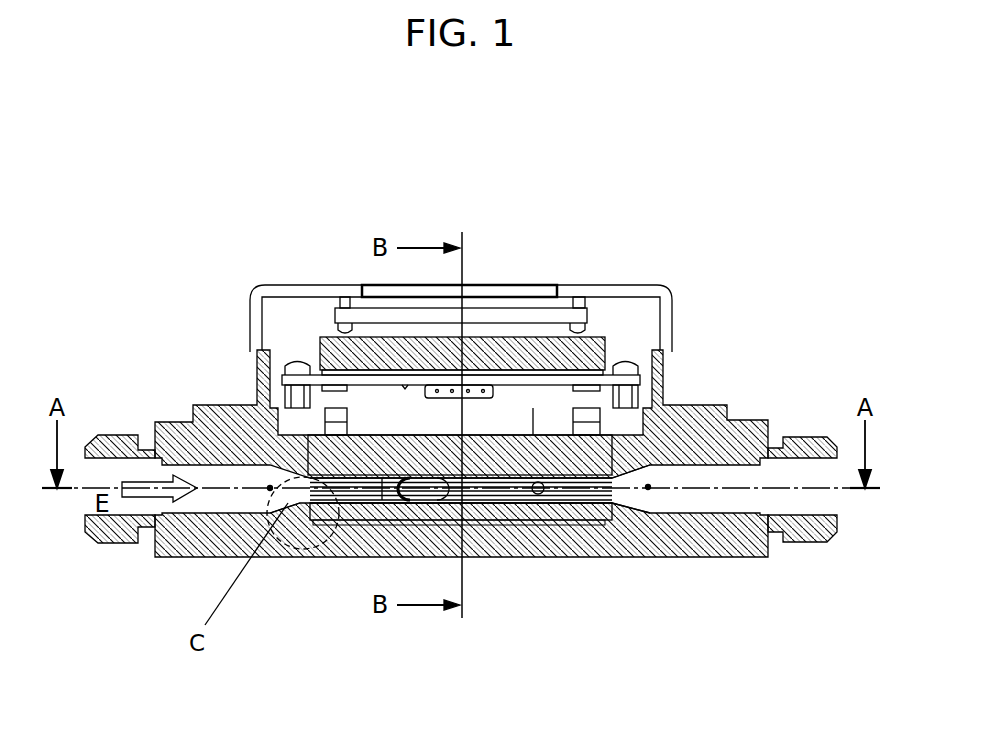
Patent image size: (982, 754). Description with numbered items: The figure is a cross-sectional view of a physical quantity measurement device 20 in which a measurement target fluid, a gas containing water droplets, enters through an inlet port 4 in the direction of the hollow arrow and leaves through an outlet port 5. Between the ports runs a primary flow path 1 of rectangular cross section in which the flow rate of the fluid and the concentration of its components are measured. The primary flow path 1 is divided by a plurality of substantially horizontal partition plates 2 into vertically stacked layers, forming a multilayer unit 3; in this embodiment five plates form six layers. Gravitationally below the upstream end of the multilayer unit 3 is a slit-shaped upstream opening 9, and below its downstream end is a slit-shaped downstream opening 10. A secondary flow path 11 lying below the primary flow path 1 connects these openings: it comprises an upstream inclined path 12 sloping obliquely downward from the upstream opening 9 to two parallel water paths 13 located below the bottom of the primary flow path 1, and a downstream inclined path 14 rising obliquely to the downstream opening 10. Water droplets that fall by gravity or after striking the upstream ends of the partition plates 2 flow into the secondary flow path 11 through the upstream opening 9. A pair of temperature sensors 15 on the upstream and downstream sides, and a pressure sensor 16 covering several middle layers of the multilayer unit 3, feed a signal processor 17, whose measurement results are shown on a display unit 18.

The primary flow path 1 is at (333, 480).
The partition plate 2 is at (473, 495).
The multilayer unit 3 is at (490, 495).
The inlet port 4 is at (115, 470).
The outlet port 5 is at (788, 475).
The upstream opening 9 is at (312, 508).
The downstream opening 10 is at (617, 487).
The secondary flow path 11 is at (345, 522).
The upstream inclined path 12 is at (312, 512).
The water path 13 is at (470, 522).
The downstream inclined path 14 is at (607, 507).
The temperature sensor 15 is at (270, 488).
The pressure sensor 16 is at (546, 490).
The signal processor 17 is at (505, 348).
The display unit 18 is at (477, 308).
The physical quantity measurement device 20 is at (431, 749).